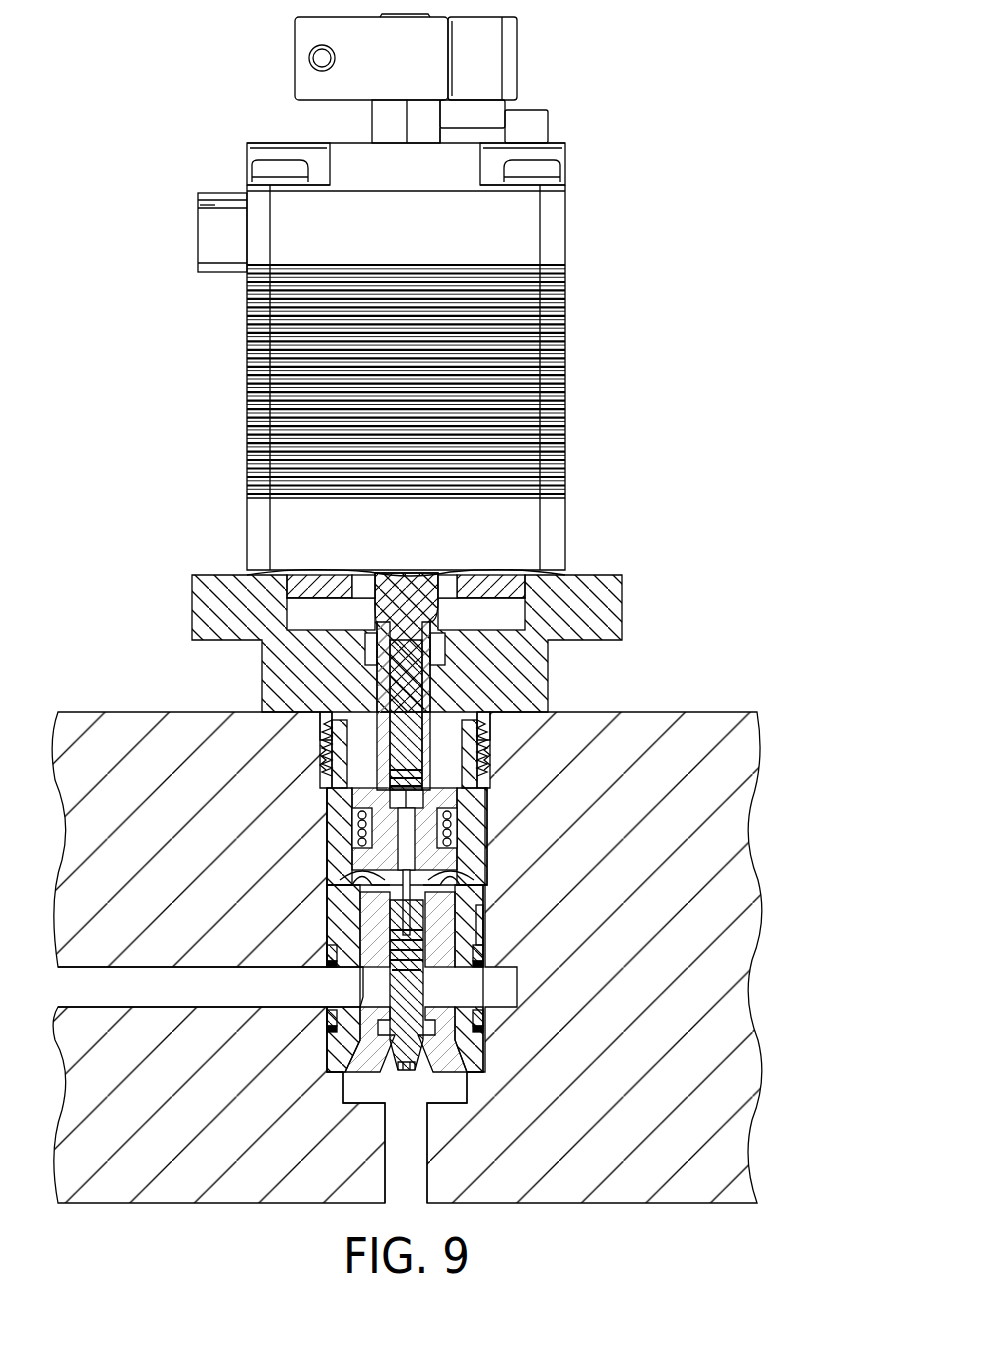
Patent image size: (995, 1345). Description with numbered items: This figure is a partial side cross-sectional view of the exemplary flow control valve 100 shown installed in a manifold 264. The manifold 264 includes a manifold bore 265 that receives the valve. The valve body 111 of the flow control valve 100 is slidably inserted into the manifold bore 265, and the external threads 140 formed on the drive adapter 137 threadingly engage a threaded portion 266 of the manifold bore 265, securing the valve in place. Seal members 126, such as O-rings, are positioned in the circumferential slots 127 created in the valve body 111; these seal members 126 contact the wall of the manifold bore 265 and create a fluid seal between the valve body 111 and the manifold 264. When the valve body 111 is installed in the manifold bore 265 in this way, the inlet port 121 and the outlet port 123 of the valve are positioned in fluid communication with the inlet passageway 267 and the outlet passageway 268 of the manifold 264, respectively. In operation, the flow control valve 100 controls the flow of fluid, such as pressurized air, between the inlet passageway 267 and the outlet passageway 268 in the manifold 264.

The flow control valve 100 is at (178, 92).
The drive adapter 137 is at (513, 676).
The external threads 140 is at (333, 733).
The manifold 264 is at (685, 725).
The threaded portion 266 is at (503, 738).
The manifold bore 265 is at (480, 855).
The valve body 111 is at (483, 930).
The circumferential slots 127 is at (488, 945).
The seal members 126 is at (488, 955).
The inlet port 121 is at (347, 980).
The inlet passageway 267 is at (193, 997).
The outlet port 123 is at (387, 1072).
The outlet passageway 268 is at (424, 1179).